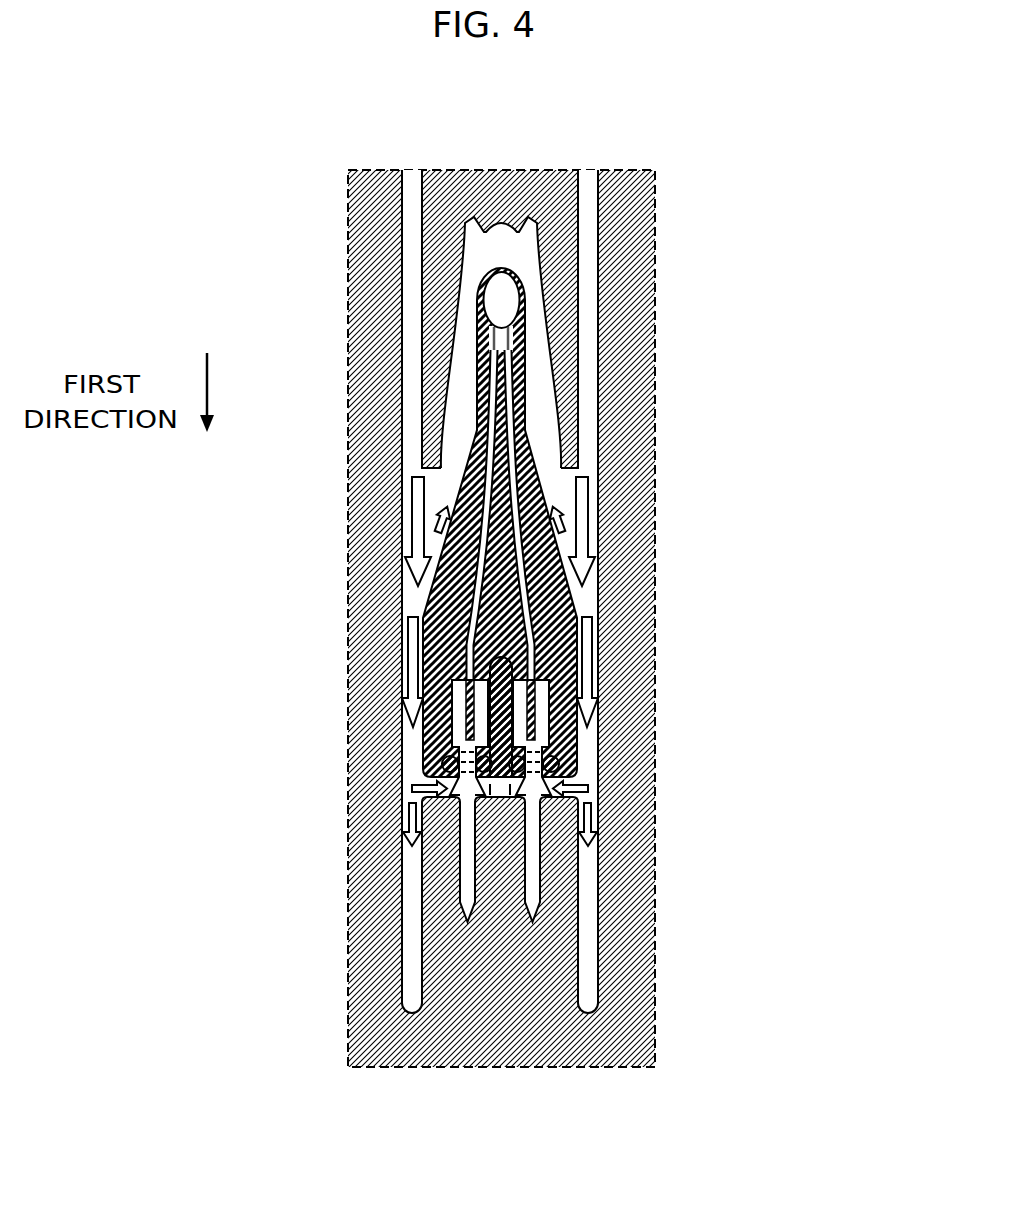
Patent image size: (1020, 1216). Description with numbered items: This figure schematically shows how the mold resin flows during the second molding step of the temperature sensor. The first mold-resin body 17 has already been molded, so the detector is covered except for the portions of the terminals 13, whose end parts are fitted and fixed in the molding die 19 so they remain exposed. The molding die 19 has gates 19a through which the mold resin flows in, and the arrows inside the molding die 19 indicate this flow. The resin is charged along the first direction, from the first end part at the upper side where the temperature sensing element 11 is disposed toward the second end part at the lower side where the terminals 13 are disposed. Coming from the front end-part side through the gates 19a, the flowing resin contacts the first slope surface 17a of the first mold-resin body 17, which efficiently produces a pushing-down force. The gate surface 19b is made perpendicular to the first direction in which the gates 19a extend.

The temperature sensing element 11 is at (508, 300).
The terminals 13 is at (472, 873).
The first mold-resin body 17 is at (442, 598).
The first slope surface 17a is at (545, 500).
The molding die 19 is at (372, 218).
The gates 19a is at (412, 330).
The gate surface 19b is at (404, 462).